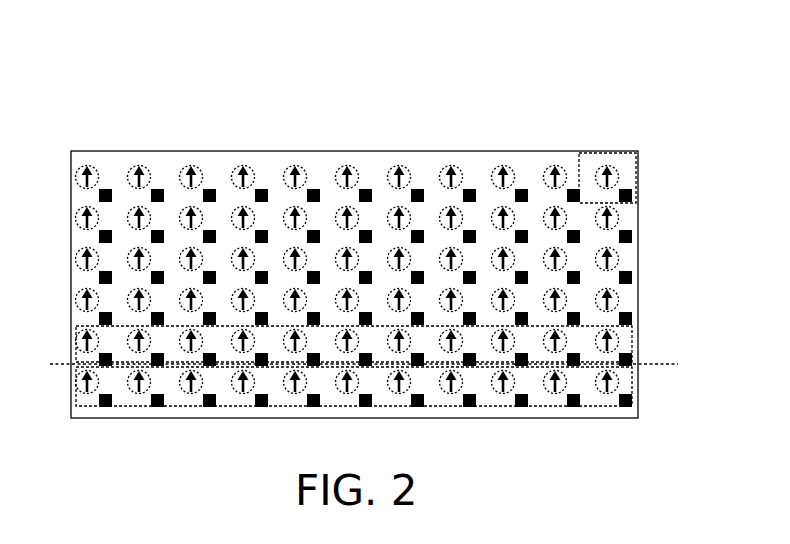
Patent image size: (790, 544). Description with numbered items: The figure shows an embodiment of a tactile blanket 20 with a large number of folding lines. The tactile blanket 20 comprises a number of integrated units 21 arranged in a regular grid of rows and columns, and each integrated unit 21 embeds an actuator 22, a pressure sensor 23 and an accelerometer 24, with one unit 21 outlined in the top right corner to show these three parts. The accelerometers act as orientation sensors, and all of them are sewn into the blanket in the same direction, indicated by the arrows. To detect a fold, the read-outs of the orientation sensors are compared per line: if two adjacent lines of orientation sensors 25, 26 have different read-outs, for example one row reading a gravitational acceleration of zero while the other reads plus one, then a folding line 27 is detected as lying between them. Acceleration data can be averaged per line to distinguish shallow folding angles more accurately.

The tactile blanket 20 is at (372, 226).
The integrated unit 21 is at (642, 162).
The actuator 22 is at (596, 171).
The pressure sensor 23 is at (633, 196).
The accelerometer 24 is at (617, 182).
The line of orientation sensors 25 is at (632, 387).
The line of orientation sensors 26 is at (632, 343).
The folding line 27 is at (380, 366).